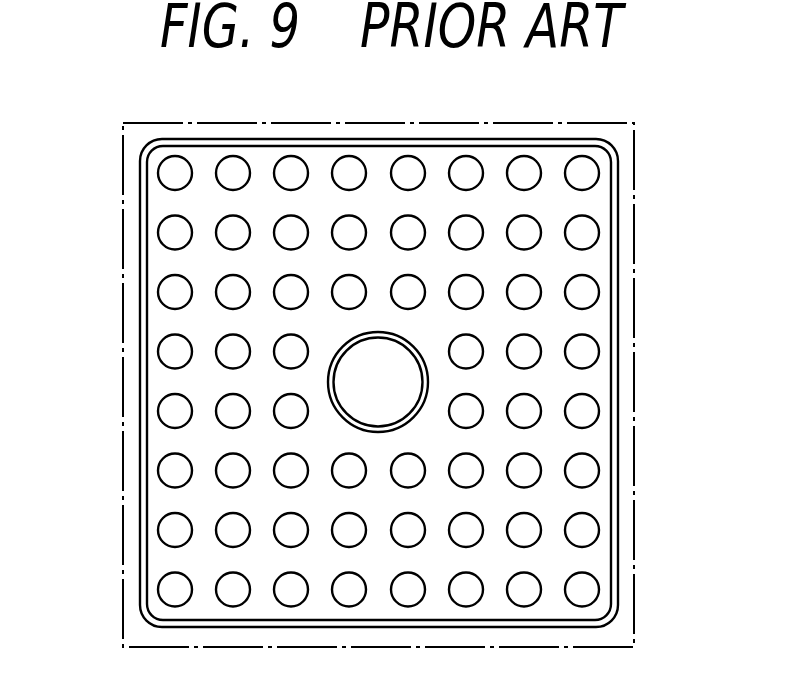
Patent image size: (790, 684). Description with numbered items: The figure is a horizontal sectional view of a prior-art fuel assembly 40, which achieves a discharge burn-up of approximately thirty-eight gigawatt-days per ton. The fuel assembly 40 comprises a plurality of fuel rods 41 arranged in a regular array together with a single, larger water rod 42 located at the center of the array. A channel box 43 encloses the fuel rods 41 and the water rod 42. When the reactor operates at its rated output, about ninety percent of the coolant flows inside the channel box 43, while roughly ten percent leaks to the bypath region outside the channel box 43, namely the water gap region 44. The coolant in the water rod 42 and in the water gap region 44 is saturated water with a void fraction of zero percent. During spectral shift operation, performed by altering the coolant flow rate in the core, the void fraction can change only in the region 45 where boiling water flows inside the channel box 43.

The fuel assembly 40 is at (100, 188).
The fuel rods 41 is at (598, 347).
The water rod 42 is at (428, 378).
The channel box 43 is at (468, 143).
The water gap region 44 is at (627, 190).
The region where boiling water flows 45 is at (590, 265).